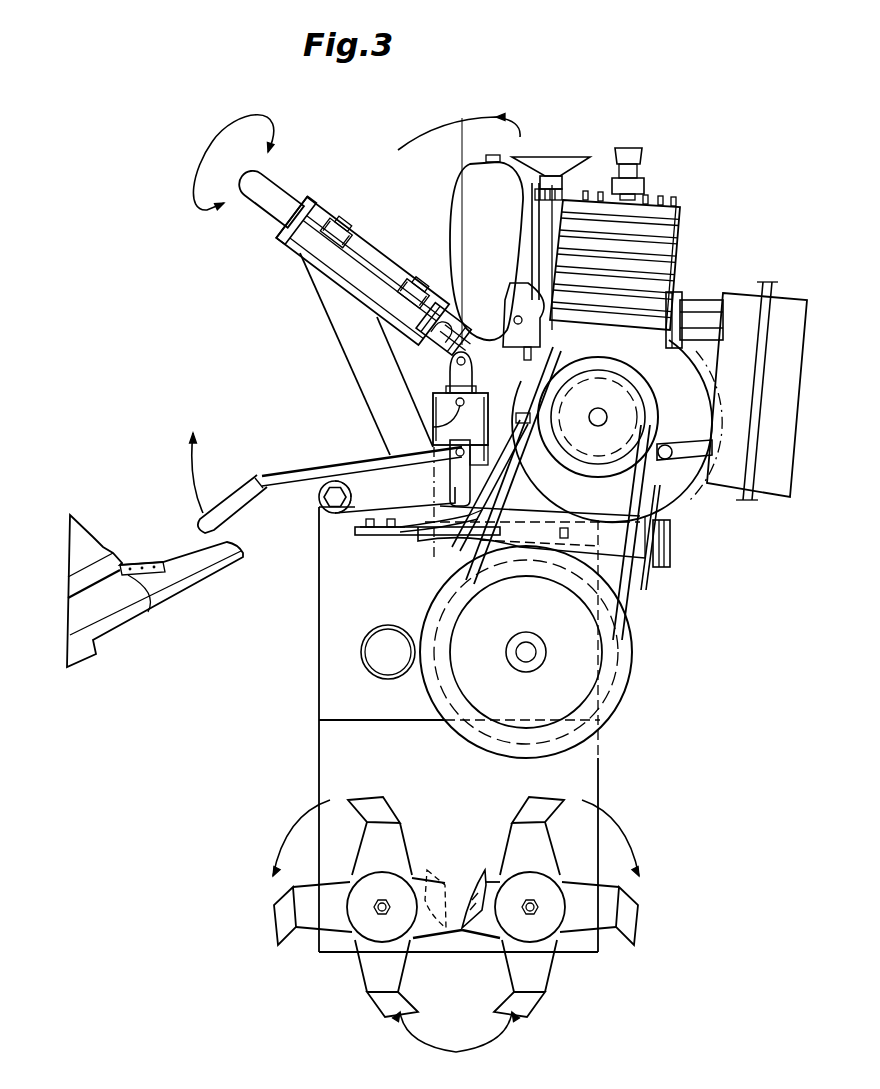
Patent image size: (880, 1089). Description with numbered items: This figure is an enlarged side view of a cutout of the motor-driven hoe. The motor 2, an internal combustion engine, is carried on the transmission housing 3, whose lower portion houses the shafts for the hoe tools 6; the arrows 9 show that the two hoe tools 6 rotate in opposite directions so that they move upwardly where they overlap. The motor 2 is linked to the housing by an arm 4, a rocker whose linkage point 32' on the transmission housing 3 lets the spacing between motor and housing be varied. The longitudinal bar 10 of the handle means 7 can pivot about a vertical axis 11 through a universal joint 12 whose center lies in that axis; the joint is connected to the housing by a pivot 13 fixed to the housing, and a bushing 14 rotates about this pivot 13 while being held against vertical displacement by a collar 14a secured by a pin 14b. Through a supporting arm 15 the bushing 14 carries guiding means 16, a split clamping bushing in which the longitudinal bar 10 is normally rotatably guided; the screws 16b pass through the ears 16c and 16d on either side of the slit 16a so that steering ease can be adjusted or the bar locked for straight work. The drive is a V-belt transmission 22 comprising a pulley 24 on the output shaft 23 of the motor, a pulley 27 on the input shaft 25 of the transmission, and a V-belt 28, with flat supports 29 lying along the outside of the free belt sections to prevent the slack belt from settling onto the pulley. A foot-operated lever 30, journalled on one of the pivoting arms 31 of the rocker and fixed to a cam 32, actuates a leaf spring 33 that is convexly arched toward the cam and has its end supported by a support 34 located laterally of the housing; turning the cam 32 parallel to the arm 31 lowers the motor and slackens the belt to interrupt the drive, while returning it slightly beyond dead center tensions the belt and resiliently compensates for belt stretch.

The motor 2 is at (655, 371).
The transmission housing 3 is at (310, 667).
The arm 4 is at (345, 506).
The hoe tools 6 is at (352, 838).
The handle means 7 is at (310, 193).
The arrows 9 is at (458, 926).
The longitudinal bar 10 is at (268, 208).
The vertical axis 11 is at (455, 278).
The universal joint 12 is at (463, 347).
The pivot 13 is at (473, 380).
The bushing 14 is at (501, 463).
The collar 14a is at (480, 408).
The pin 14b is at (433, 427).
The supporting arm 15 is at (350, 366).
The guiding means 16 is at (373, 257).
The slit 16a is at (368, 280).
The screws 16b is at (328, 224).
The ear 16c is at (345, 232).
The ear 16d is at (307, 252).
The V-belt transmission 22 is at (633, 602).
The output shaft 23 is at (604, 423).
The pulley 24 is at (622, 417).
The input shaft 25 is at (524, 653).
The pulley 27 is at (540, 652).
The V-belt 28 is at (650, 572).
The flat supports 29 is at (660, 503).
The lever 30 is at (300, 476).
The pivoting arm 31 is at (395, 497).
The cam 32 is at (436, 473).
The linkage point 32' is at (345, 469).
The leaf spring 33 is at (466, 518).
The support 34 is at (380, 537).